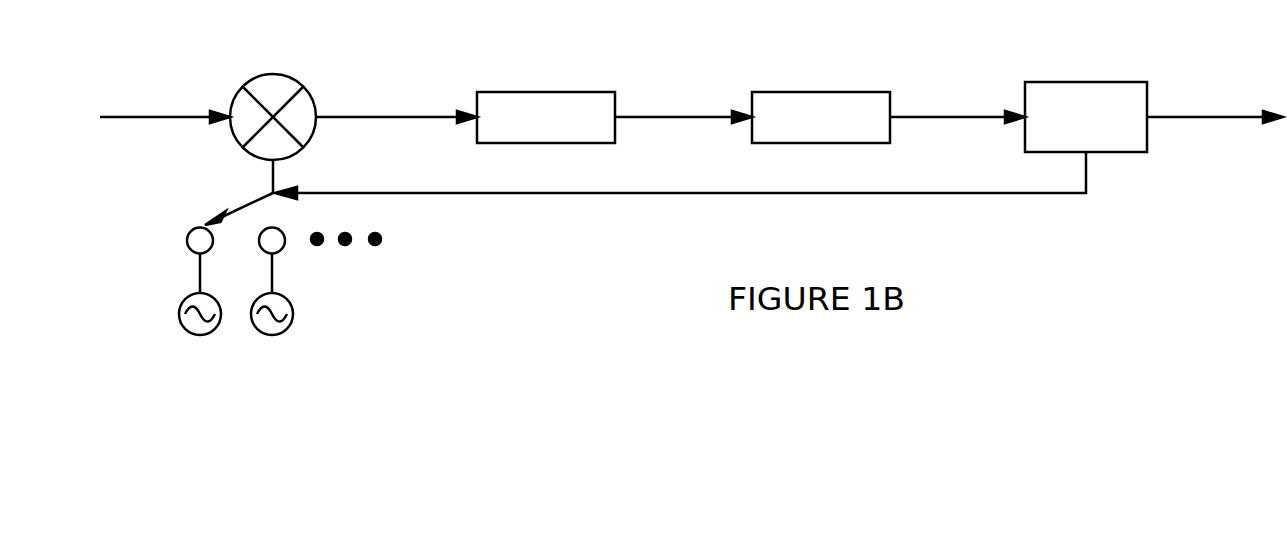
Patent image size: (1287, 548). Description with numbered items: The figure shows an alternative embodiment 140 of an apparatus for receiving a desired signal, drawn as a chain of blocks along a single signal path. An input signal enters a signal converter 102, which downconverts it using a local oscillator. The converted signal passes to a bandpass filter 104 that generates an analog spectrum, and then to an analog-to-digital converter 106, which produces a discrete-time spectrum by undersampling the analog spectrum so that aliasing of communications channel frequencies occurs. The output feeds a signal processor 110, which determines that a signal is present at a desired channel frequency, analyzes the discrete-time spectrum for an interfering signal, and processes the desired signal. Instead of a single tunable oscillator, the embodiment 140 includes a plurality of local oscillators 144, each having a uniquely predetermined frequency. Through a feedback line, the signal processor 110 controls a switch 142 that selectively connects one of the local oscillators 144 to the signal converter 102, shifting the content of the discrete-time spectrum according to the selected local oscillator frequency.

The alternative embodiment 140 is at (270, 23).
The signal converter 102 is at (234, 79).
The bandpass filter 104 is at (541, 81).
The analog-to-digital converter 106 is at (814, 81).
The signal processor 110 is at (1057, 130).
The switch 142 is at (216, 203).
The local oscillators 144 is at (244, 282).